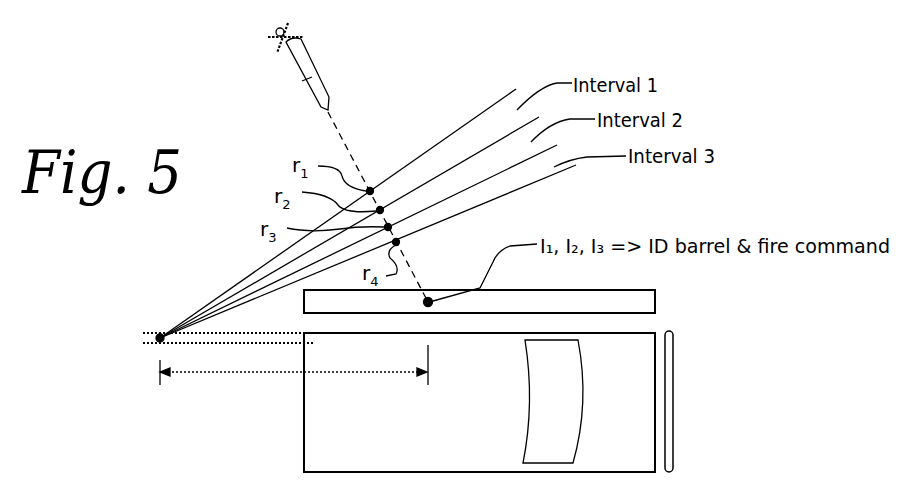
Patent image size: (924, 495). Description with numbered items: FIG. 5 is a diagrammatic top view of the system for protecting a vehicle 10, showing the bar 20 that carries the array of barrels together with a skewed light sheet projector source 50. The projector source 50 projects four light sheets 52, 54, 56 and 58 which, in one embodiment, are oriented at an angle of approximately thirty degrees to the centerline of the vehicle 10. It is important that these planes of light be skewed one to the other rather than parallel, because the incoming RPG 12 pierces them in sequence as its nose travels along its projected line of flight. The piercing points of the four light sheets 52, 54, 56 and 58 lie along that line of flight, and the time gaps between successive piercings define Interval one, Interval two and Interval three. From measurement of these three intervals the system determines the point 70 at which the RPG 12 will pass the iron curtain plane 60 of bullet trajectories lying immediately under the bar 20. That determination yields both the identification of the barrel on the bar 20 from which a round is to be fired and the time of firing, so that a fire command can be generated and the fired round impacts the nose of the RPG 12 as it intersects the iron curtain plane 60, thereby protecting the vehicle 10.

The vehicle 10 is at (620, 388).
The RPG 12 is at (308, 88).
The bar 20 is at (637, 303).
The light sheet projector source 50 is at (157, 344).
The light sheet 52 is at (476, 117).
The light sheet 54 is at (450, 167).
The light sheet 56 is at (470, 189).
The light sheet 58 is at (546, 181).
The iron curtain plane 60 is at (347, 145).
The point 70 is at (430, 298).